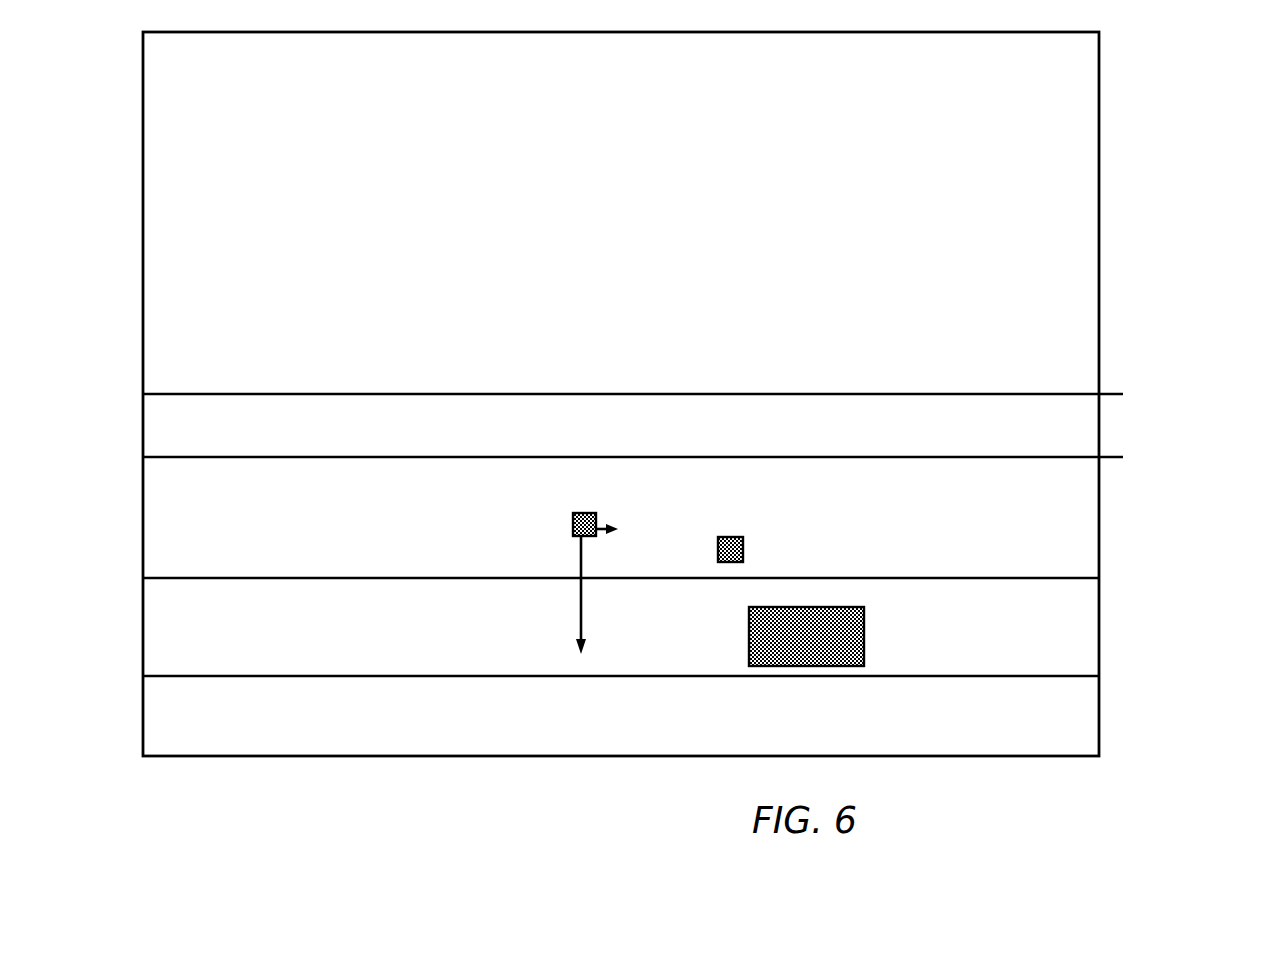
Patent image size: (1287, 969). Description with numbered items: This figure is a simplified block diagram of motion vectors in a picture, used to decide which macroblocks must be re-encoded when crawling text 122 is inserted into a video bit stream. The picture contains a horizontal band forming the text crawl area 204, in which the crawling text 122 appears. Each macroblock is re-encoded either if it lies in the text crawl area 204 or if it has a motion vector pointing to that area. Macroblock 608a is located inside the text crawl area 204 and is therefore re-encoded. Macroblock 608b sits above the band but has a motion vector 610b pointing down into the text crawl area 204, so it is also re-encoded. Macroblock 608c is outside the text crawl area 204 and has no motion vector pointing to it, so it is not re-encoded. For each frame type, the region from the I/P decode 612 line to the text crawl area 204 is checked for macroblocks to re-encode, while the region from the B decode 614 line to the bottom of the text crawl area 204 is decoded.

The I/P decode line 612 is at (695, 378).
The B decode line 614 is at (696, 460).
The text crawl area 204 is at (1099, 643).
The crawling text 122 is at (475, 628).
The macroblock 608a is at (781, 651).
The macroblock 608b is at (588, 505).
The macroblock 608c is at (733, 530).
The motion vector 610b is at (601, 583).